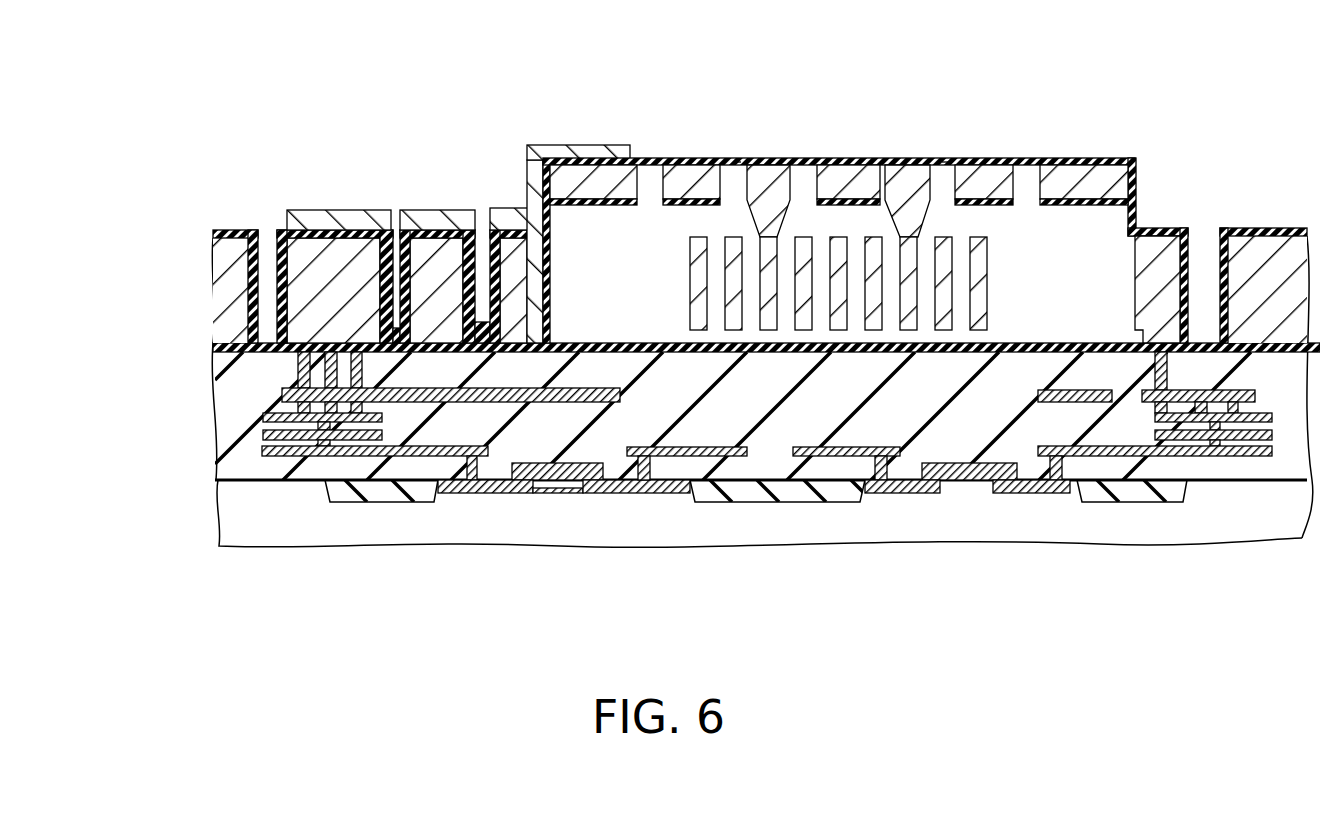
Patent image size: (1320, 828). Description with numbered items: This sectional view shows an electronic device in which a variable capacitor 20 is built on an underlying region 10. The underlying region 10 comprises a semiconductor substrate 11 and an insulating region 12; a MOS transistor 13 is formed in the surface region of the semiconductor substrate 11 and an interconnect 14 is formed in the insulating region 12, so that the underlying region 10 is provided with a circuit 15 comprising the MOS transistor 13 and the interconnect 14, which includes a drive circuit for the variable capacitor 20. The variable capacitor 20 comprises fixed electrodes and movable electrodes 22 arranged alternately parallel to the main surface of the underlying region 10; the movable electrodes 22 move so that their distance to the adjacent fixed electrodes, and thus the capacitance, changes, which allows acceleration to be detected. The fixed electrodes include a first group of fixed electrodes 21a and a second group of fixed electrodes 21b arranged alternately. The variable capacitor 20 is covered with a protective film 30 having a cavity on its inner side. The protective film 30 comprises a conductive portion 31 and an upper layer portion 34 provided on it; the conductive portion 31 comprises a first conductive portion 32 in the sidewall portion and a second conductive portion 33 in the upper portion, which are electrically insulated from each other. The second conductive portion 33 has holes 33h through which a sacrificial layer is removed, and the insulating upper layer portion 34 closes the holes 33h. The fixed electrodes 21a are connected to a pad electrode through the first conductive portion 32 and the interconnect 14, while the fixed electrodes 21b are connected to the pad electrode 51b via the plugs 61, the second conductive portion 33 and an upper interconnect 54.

The underlying region 10 is at (710, 391).
The semiconductor substrate 11 is at (196, 480).
The insulating region 12 is at (170, 530).
The MOS transistor 13 is at (564, 527).
The interconnect 14 is at (316, 460).
The circuit 15 is at (476, 497).
The variable capacitor 20 is at (838, 454).
The fixed electrodes of the first group 21a is at (698, 332).
The fixed electrodes of the second group 21b is at (768, 332).
The movable electrodes 22 is at (840, 419).
The protective film 30 is at (865, 171).
The conductive portion 31 is at (865, 192).
The first conductive portion 32 is at (1157, 214).
The second conductive portion 33 is at (1002, 180).
The holes 33h is at (738, 168).
The upper layer portion 34 is at (982, 158).
The pad electrode 51b is at (333, 210).
The upper interconnect 54 is at (503, 208).
The plugs 61 is at (776, 195).